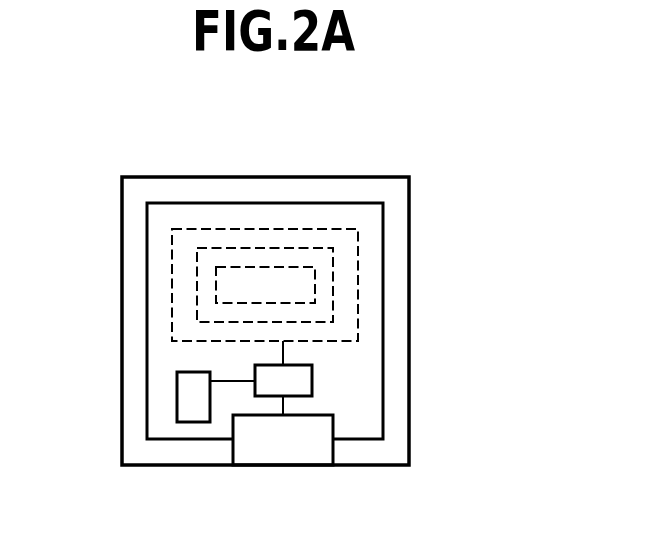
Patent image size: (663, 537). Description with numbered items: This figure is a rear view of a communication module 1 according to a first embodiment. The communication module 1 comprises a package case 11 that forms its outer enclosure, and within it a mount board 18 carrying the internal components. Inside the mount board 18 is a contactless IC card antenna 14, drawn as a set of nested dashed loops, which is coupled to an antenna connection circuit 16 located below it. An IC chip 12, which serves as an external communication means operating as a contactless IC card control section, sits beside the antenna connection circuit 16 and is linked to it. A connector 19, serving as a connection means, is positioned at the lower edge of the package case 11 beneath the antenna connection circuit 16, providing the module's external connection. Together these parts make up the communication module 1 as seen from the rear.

The communication module 1 is at (401, 151).
The package case 11 is at (410, 272).
The IC chip 12 is at (192, 412).
The contactless IC card antenna 14 is at (253, 229).
The antenna connection circuit 16 is at (293, 380).
The mount board 18 is at (155, 357).
The connector 19 is at (284, 447).